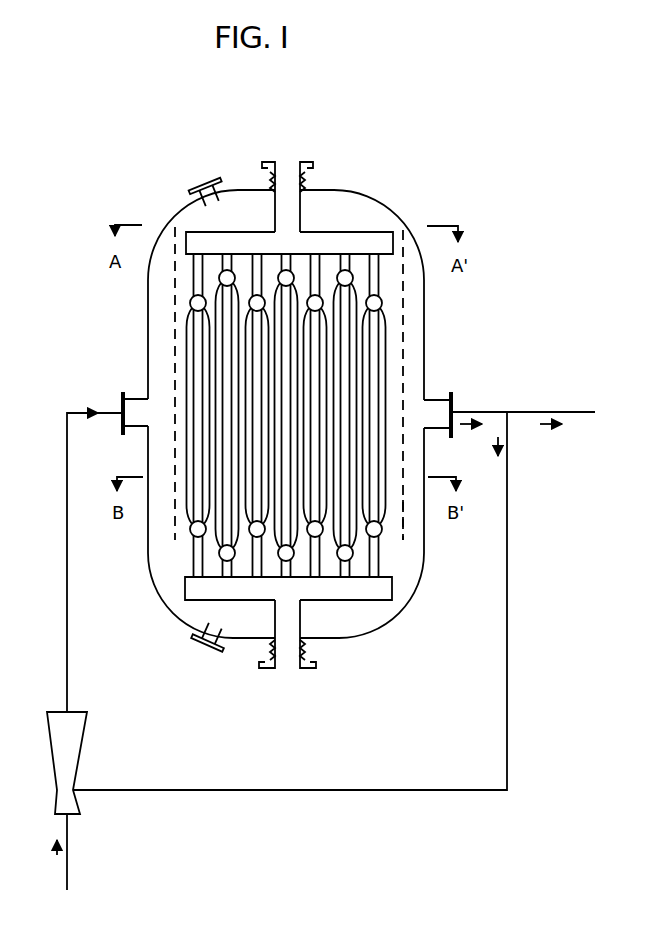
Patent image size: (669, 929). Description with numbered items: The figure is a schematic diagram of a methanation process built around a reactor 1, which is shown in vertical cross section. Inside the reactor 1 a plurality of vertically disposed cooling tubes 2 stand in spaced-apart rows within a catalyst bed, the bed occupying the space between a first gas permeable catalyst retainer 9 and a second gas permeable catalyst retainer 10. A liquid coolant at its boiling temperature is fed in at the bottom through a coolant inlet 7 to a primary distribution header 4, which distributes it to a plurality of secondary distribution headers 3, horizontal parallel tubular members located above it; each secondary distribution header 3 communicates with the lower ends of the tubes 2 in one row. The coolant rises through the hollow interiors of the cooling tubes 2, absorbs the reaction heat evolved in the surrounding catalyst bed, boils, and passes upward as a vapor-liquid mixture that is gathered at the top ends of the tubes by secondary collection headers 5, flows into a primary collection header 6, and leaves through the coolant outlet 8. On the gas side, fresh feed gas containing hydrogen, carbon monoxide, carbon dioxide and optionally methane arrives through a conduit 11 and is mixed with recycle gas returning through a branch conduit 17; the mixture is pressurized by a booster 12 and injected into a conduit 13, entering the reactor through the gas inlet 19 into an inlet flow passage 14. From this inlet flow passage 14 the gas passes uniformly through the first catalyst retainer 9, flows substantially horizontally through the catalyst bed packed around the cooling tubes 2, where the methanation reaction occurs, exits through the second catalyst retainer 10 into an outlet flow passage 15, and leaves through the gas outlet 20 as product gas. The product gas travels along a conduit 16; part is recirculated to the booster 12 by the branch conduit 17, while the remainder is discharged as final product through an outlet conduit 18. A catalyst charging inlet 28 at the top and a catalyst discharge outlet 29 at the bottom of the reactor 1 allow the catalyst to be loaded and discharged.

The reactor 1 is at (148, 297).
The cooling tubes 2 is at (285, 415).
The secondary distribution headers 3 is at (383, 532).
The primary distribution header 4 is at (362, 590).
The secondary collection headers 5 is at (355, 277).
The primary collection header 6 is at (363, 241).
The coolant inlet 7 is at (287, 663).
The coolant outlet 8 is at (290, 170).
The first gas permeable catalyst retainer 9 is at (172, 448).
The second gas permeable catalyst retainer 10 is at (403, 515).
The conduit 11 is at (67, 879).
The booster 12 is at (85, 743).
The conduit 13 is at (66, 512).
The inlet flow passage 14 is at (160, 331).
The outlet flow passage 15 is at (412, 452).
The conduit 16 is at (482, 412).
The branch conduit 17 is at (508, 486).
The outlet conduit 18 is at (540, 412).
The gas inlet 19 is at (122, 402).
The gas outlet 20 is at (452, 403).
The catalyst charging inlet 28 is at (203, 186).
The catalyst discharge outlet 29 is at (204, 649).